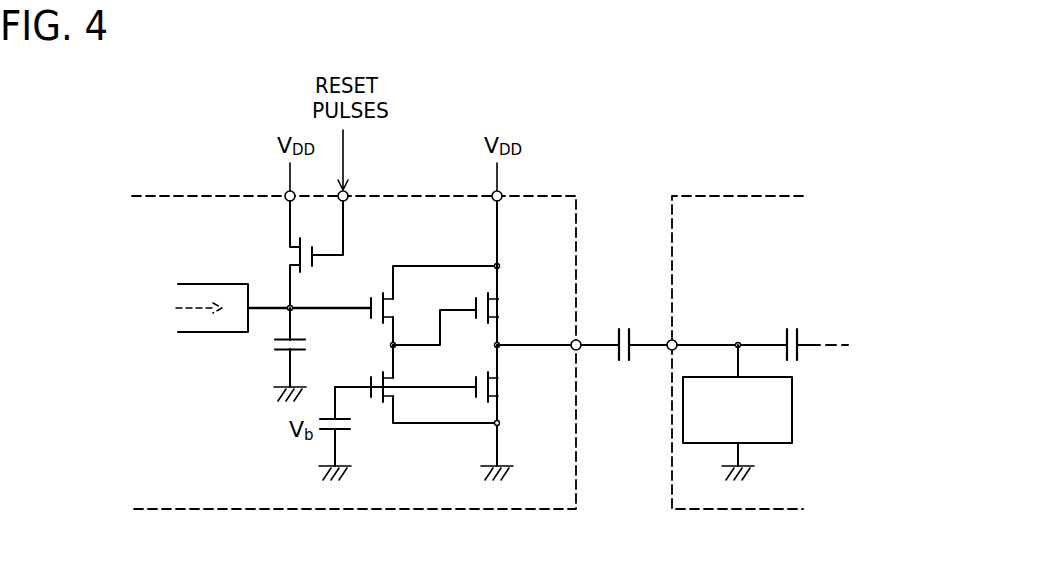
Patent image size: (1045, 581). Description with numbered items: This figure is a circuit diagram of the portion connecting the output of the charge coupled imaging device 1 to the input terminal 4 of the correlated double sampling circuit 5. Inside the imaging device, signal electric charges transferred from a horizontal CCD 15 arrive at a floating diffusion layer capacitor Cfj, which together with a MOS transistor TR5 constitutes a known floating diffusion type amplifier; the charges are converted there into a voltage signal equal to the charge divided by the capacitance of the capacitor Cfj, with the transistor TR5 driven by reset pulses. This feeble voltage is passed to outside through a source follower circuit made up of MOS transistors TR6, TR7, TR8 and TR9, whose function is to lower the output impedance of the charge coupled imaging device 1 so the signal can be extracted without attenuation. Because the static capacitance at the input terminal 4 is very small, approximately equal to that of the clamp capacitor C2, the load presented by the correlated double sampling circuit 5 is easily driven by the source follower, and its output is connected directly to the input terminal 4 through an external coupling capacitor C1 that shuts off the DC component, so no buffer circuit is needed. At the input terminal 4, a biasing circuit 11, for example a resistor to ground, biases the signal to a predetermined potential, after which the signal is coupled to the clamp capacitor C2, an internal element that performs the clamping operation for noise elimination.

The charge coupled imaging device 1 is at (160, 196).
The correlated double sampling circuit 5 is at (705, 192).
The horizontal CCD 15 is at (195, 333).
The input terminal 4 is at (670, 340).
The biasing circuit 11 is at (765, 444).
The MOS transistor TR5 is at (295, 254).
The MOS transistor TR6 is at (434, 289).
The MOS transistor TR7 is at (434, 398).
The MOS transistor TR8 is at (508, 273).
The MOS transistor TR9 is at (509, 412).
The floating diffusion layer capacitor Cfj is at (312, 354).
The coupling capacitor C1 is at (624, 359).
The clamp capacitor C2 is at (793, 331).